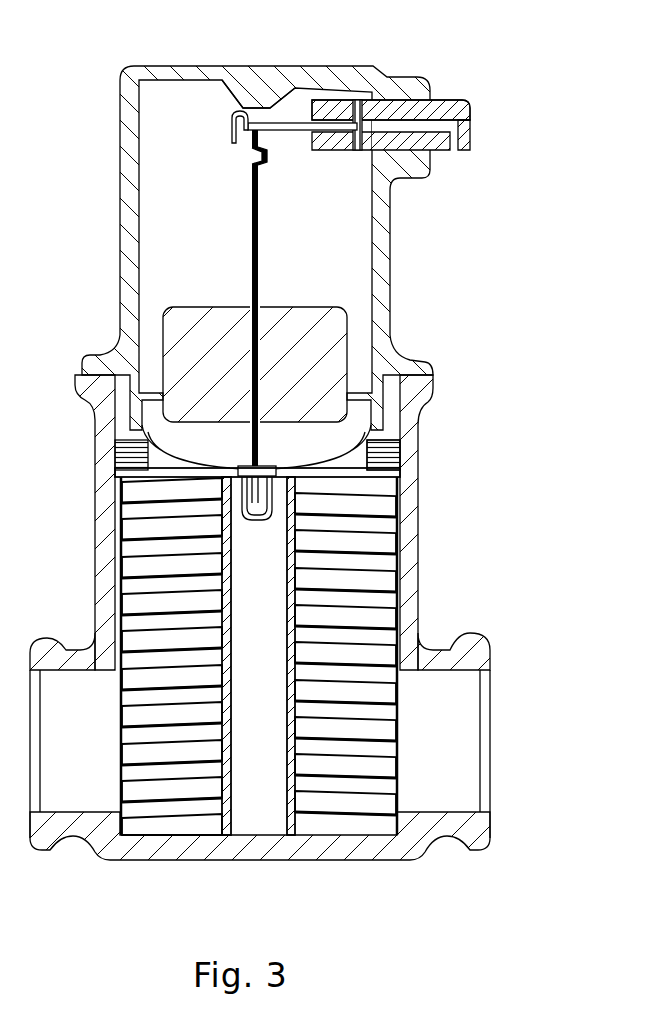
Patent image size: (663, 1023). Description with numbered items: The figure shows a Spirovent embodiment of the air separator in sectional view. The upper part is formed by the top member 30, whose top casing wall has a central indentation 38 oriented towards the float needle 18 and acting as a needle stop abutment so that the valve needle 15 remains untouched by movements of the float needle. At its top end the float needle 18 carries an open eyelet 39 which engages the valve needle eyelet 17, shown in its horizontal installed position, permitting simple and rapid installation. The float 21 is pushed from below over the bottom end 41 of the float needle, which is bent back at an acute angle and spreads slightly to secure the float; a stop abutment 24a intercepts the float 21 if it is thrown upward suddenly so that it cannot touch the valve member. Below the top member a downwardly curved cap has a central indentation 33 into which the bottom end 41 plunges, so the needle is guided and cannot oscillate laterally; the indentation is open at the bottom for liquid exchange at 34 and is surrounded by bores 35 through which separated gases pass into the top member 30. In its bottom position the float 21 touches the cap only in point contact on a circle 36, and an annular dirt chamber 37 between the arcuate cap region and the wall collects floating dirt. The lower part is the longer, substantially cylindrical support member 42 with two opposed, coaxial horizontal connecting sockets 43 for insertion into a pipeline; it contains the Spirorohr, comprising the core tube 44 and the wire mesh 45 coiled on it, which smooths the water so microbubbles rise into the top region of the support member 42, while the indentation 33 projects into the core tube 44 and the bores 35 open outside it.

The valve needle 15 is at (290, 125).
The valve needle eyelet 17 is at (260, 130).
The float needle 18 is at (258, 255).
The float 21 is at (330, 326).
The stop abutment 24a is at (253, 162).
The top member 30 is at (128, 78).
The central indentation 33 is at (118, 500).
The liquid exchange opening 34 is at (257, 495).
The bores 35 is at (190, 445).
The circle 36 is at (150, 463).
The annular dirt chamber 37 is at (395, 457).
The central indentation 38 is at (253, 100).
The open eyelet 39 is at (234, 143).
The bottom end of the float needle 41 is at (380, 487).
The support member 42 is at (118, 603).
The connecting sockets 43 is at (53, 833).
The core tube 44 is at (383, 716).
The wire mesh 45 is at (383, 772).